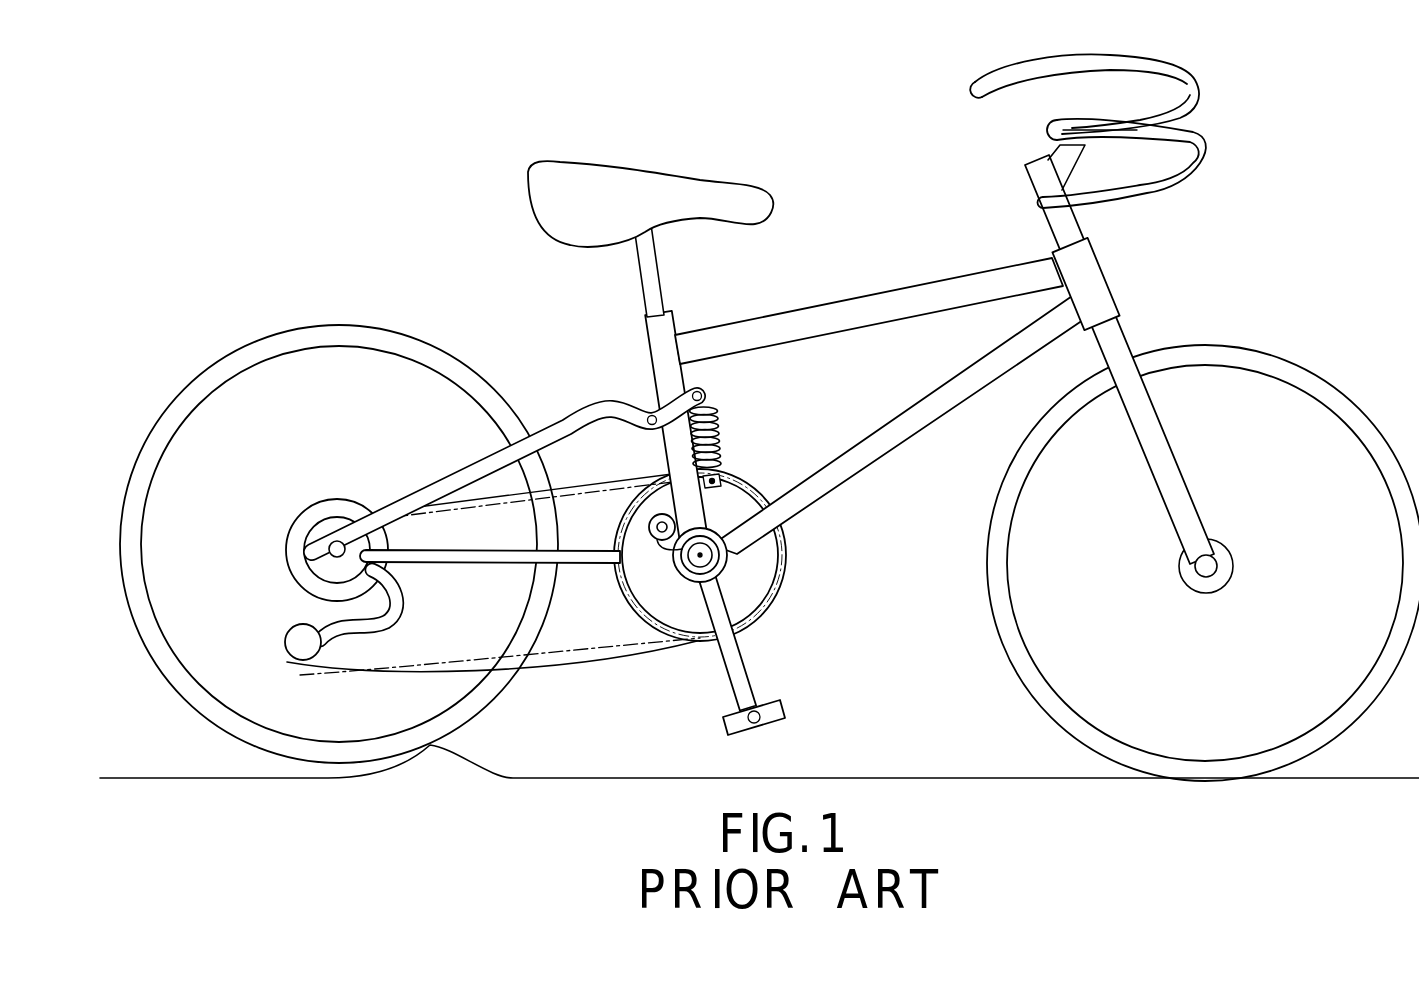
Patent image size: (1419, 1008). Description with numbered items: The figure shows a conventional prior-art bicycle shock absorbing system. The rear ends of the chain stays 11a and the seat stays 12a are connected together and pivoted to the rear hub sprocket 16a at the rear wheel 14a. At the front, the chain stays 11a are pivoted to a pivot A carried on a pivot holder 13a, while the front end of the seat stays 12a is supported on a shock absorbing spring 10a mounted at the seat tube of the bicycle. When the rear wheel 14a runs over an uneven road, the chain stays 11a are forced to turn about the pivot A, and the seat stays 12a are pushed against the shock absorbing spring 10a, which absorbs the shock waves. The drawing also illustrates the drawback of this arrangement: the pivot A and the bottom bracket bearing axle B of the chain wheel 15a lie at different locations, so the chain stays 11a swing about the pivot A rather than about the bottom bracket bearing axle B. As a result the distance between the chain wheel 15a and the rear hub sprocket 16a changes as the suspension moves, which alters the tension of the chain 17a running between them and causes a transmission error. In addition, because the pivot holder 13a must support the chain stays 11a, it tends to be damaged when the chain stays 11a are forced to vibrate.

The shock absorbing spring 10a is at (722, 430).
The chain stays 11a is at (582, 564).
The seat stays 12a is at (567, 420).
The pivot holder 13a is at (650, 520).
The rear wheel 14a is at (325, 337).
The chain wheel 15a is at (783, 587).
The rear hub sprocket 16a is at (330, 520).
The chain 17a is at (543, 672).
The pivot A is at (662, 531).
The bottom bracket bearing axle B is at (700, 557).